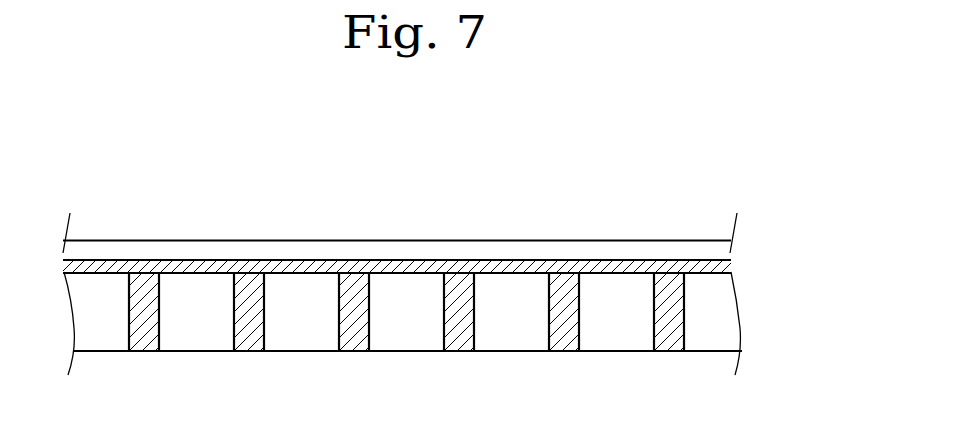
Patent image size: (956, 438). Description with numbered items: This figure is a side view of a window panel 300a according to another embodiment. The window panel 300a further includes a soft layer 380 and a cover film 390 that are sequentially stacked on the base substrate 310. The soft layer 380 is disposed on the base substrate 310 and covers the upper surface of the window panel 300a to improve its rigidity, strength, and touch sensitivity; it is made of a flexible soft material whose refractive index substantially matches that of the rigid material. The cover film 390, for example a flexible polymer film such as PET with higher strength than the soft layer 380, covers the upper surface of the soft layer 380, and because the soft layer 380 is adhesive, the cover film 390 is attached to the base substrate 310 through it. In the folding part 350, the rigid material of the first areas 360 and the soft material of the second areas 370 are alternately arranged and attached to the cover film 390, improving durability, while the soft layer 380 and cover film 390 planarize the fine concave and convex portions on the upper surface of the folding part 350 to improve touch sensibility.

The window panel 300a is at (652, 149).
The base substrate 310 is at (474, 270).
The folding part 350 is at (441, 229).
The first area 360 is at (234, 216).
The second area 370 is at (264, 260).
The soft layer 380 is at (717, 267).
The cover film 390 is at (716, 251).